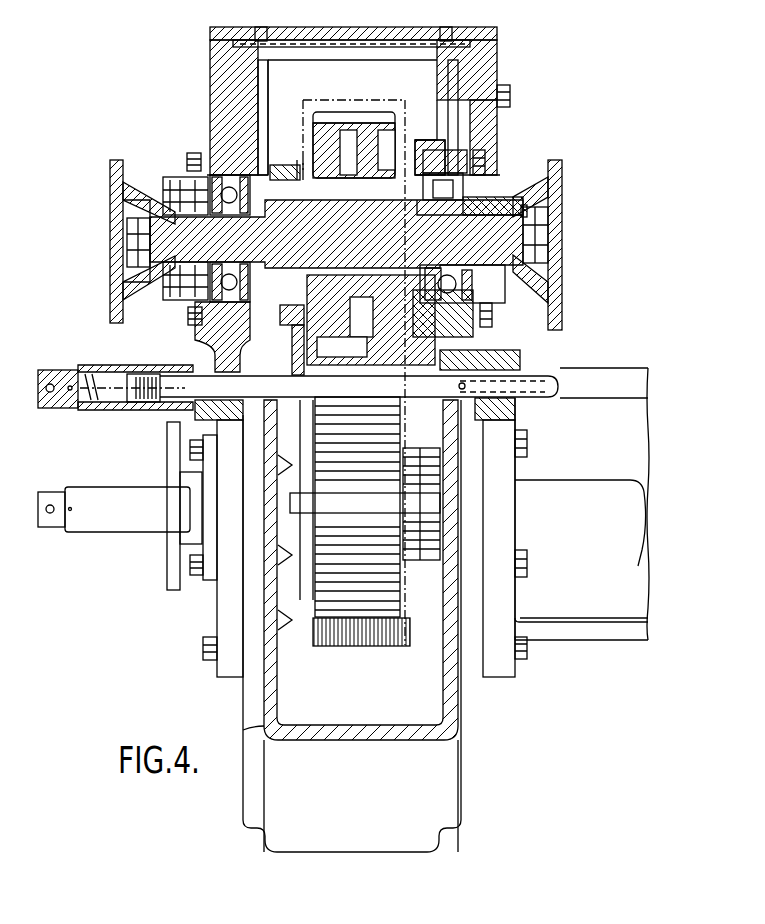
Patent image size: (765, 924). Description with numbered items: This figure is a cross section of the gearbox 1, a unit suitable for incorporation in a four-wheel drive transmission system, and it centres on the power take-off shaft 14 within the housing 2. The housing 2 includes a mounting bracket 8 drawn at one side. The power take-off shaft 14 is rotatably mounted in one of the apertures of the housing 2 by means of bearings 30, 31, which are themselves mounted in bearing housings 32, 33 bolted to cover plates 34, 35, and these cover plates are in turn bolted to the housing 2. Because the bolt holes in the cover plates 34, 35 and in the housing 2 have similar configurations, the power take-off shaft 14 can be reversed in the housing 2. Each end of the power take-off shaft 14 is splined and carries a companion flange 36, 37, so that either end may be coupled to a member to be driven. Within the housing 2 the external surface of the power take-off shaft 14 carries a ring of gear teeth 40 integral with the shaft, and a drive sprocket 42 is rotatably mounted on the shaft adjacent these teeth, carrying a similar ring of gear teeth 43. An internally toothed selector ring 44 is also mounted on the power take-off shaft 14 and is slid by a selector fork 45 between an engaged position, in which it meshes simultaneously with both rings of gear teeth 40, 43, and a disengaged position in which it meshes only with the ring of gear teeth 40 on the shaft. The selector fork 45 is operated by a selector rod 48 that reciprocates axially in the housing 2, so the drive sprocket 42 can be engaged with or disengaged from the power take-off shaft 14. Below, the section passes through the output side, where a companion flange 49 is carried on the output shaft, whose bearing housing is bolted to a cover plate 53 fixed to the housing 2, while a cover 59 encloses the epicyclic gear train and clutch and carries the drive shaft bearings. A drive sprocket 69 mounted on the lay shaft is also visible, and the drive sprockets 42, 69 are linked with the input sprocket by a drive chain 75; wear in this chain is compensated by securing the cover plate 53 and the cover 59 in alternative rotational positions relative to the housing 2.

The gearbox 1 is at (175, 98).
The housing 2 is at (396, 28).
The mounting bracket 8 is at (600, 559).
The power take-off shaft 14 is at (127, 242).
The bearing 30 is at (182, 300).
The bearing 31 is at (482, 168).
The housing 32 is at (196, 320).
The housing 33 is at (472, 146).
The cover plate 34 is at (225, 332).
The cover plate 35 is at (490, 68).
The companion flange 36 is at (114, 313).
The companion flange 37 is at (538, 320).
The ring of gear teeth 40 is at (268, 178).
The drive sprocket 42 is at (330, 116).
The ring of gear teeth 43 is at (298, 158).
The selector ring 44 is at (286, 320).
The selector fork 45 is at (294, 348).
The selector rod 48 is at (178, 385).
The companion flange 49 is at (170, 572).
The cover plate 53 is at (210, 578).
The cover 59 is at (581, 635).
The drive sprocket 69 is at (376, 630).
The drive chain 75 is at (355, 100).